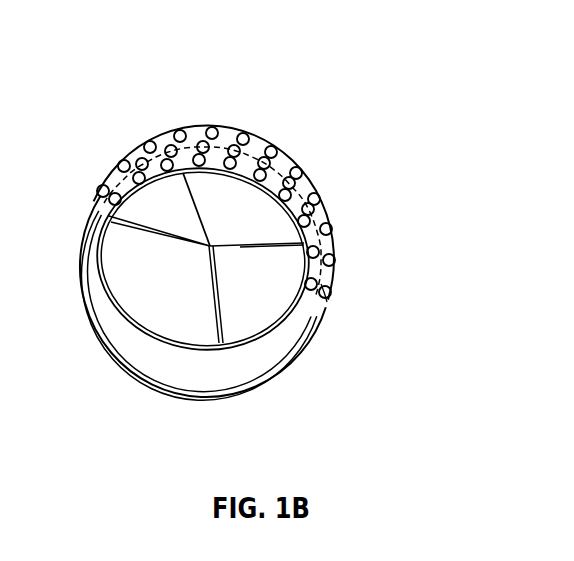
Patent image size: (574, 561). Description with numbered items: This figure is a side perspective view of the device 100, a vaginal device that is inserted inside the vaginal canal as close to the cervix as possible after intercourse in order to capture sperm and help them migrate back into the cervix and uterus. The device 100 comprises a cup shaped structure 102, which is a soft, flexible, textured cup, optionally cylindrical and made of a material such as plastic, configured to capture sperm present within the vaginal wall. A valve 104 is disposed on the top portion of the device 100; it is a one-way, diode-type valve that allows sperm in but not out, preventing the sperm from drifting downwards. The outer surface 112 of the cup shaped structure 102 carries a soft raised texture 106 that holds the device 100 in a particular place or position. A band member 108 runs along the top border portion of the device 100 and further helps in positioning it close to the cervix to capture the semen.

The device 100 is at (316, 117).
The cup shaped structure 102 is at (203, 127).
The valve 104 is at (334, 224).
The soft raised texture 106 is at (278, 330).
The band member 108 is at (151, 381).
The outer surface 112 is at (324, 297).